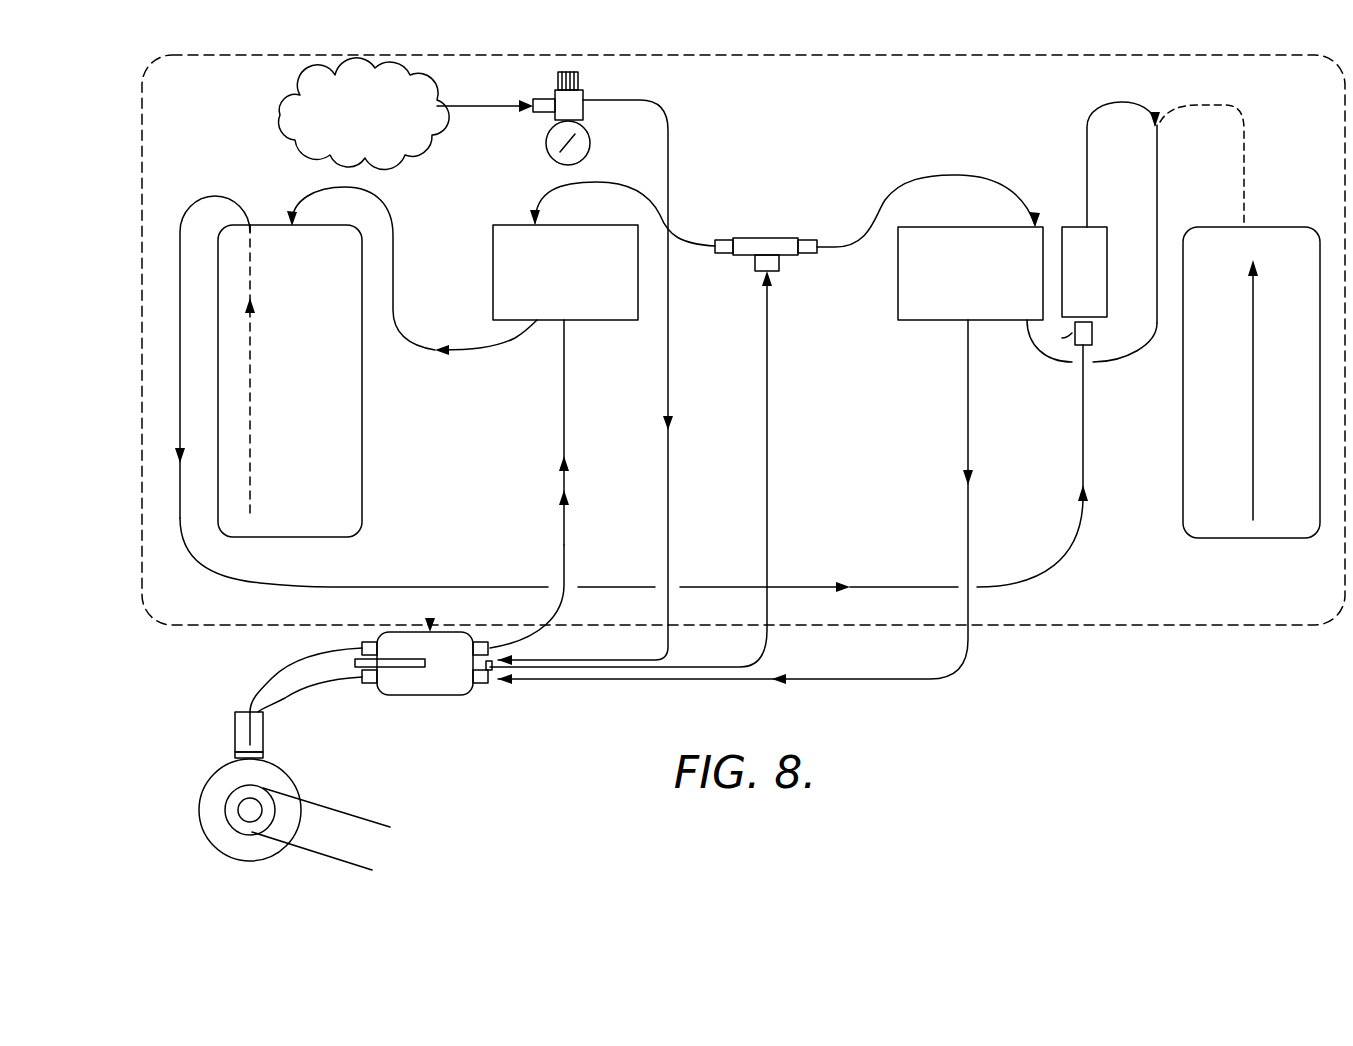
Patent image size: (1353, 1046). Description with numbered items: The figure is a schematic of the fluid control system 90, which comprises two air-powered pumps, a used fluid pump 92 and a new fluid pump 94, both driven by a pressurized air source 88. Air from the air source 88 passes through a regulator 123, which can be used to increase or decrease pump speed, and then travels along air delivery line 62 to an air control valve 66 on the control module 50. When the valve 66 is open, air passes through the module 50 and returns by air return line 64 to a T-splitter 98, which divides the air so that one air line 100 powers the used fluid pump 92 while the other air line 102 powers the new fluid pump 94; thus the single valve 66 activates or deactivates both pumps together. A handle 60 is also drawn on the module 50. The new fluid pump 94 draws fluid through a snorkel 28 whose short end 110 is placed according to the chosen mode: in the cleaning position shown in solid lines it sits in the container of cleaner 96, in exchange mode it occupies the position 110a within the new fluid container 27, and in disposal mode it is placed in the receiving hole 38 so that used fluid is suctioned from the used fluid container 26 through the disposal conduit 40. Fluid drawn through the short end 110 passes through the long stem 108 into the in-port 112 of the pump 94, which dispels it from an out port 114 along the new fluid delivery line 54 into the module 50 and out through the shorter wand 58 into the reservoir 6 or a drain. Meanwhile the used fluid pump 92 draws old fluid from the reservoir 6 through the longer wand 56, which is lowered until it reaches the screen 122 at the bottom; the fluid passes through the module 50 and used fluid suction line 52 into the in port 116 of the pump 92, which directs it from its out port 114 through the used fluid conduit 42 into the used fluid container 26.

The power steering fluid reservoir 6 is at (235, 745).
The used fluid container 26 is at (363, 380).
The new fluid container 27 is at (1250, 540).
The snorkel 28 is at (1172, 177).
The receiving hole 38 is at (1093, 332).
The disposal conduit 40 is at (320, 585).
The used fluid conduit 42 is at (370, 193).
The control module 50 is at (430, 616).
The used fluid suction line 52 is at (562, 548).
The new fluid delivery line 54 is at (702, 685).
The wand 56 is at (278, 666).
The wand 58 is at (288, 690).
The valve handle 60 is at (402, 668).
The air delivery line 62 is at (670, 568).
The air return line 64 is at (768, 503).
The air control valve 66 is at (483, 688).
The pressurized air source 88 is at (278, 103).
The fluid control system 90 is at (128, 203).
The used fluid pump 92 is at (578, 322).
The new fluid pump 94 is at (922, 321).
The container of cleaner 96 is at (1108, 245).
The T-splitter 98 is at (763, 236).
The air line 100 is at (683, 245).
The air line 102 is at (877, 198).
The long stem 108 is at (1160, 225).
The short end 110 is at (1085, 195).
The short end position 110a is at (1247, 198).
The in-port 112 is at (1025, 321).
The out port 114 is at (530, 330).
The in port 116 is at (560, 322).
The screen 122 is at (263, 755).
The regulator 123 is at (588, 78).